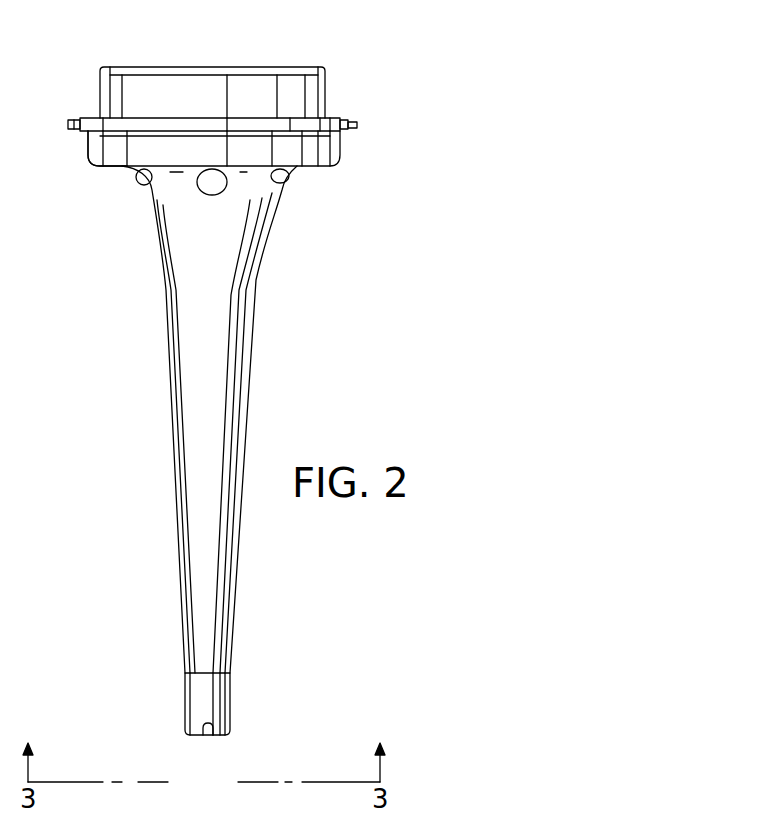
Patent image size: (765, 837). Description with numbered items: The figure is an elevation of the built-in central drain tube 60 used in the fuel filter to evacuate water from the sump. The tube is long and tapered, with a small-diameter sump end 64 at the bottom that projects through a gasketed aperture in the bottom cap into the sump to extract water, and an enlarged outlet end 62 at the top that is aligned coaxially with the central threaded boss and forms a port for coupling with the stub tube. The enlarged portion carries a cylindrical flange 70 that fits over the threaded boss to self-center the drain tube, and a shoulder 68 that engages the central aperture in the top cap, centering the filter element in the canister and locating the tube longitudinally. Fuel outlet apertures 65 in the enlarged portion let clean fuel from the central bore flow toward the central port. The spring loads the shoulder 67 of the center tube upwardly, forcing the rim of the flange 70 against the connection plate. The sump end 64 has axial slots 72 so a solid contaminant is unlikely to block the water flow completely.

The central drain tube 60 is at (175, 440).
The outlet end 62 is at (345, 155).
The sump end 64 is at (230, 695).
The fuel outlet apertures 65 is at (278, 178).
The shoulder 67 is at (357, 124).
The shoulder 68 is at (103, 166).
The cylindrical flange 70 is at (325, 93).
The axial slots 72 is at (207, 737).